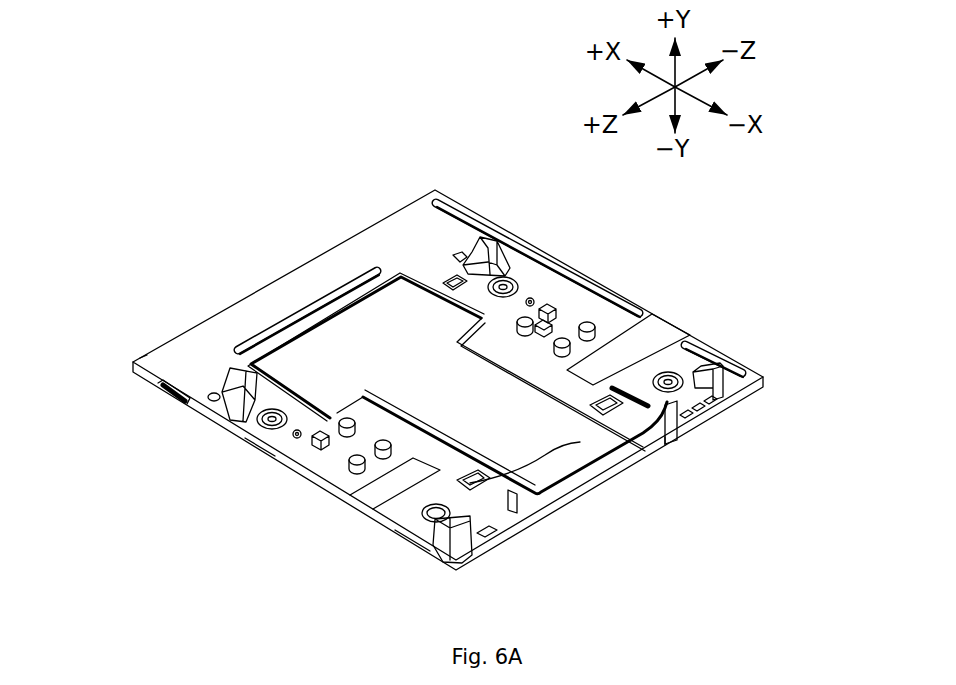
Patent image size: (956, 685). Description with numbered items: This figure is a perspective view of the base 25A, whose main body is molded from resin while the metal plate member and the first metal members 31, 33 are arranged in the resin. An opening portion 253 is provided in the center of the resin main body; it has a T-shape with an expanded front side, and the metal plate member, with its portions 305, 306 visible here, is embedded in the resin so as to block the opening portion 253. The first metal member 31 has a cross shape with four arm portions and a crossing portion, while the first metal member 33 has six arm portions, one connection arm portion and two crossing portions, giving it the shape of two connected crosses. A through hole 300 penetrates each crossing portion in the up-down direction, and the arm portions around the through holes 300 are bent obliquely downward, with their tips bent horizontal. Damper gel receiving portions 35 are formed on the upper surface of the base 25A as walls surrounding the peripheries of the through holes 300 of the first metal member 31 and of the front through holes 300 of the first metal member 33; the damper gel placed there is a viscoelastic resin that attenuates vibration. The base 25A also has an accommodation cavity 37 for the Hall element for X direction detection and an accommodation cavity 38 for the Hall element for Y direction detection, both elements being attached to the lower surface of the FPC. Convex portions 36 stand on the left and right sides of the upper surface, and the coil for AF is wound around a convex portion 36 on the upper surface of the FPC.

The bracket plate 25A is at (322, 278).
The accommodation cavity 37 is at (403, 275).
The opening portion 253 is at (328, 338).
The damper gel receiving portion 35 is at (243, 371).
The rim portion of slide plate 30 306 is at (177, 402).
The rail portion of slide plate 30 305 is at (567, 468).
The accommodation cavity 38 is at (580, 442).
The through hole 300 is at (262, 427).
The convex portion 36 is at (320, 440).
The first metal member 33 is at (258, 438).
The first metal member 31 is at (415, 535).